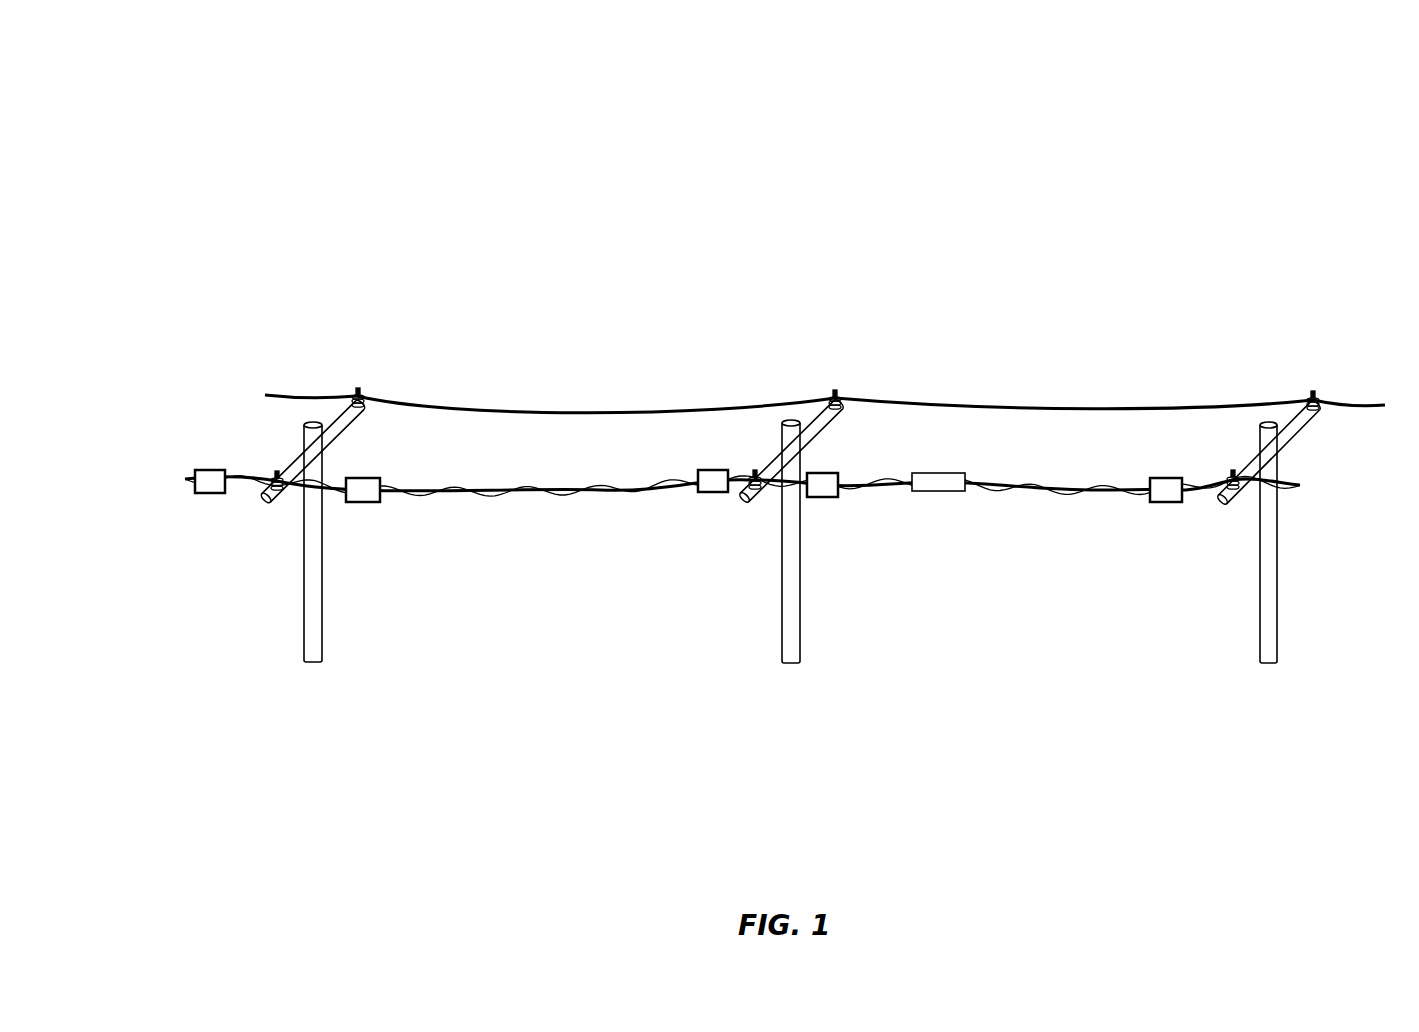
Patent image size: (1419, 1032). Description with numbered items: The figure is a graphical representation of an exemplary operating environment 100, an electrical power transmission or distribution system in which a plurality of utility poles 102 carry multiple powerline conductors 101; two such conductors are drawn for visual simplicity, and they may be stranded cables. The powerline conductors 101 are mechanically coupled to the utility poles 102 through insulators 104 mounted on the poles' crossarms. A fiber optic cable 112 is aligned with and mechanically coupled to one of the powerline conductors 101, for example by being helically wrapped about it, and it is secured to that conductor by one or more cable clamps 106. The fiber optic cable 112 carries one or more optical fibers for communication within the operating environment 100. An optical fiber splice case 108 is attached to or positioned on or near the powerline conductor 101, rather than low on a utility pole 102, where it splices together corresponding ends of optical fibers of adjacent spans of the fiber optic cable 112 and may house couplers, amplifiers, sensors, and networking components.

The operating environment 100 is at (192, 143).
The powerline conductor 101 is at (1144, 410).
The utility pole 102 is at (312, 662).
The insulator 104 is at (358, 393).
The cable clamp 106 is at (1166, 502).
The optical fiber splice case 108 is at (883, 632).
The fiber optic cable 112 is at (470, 500).